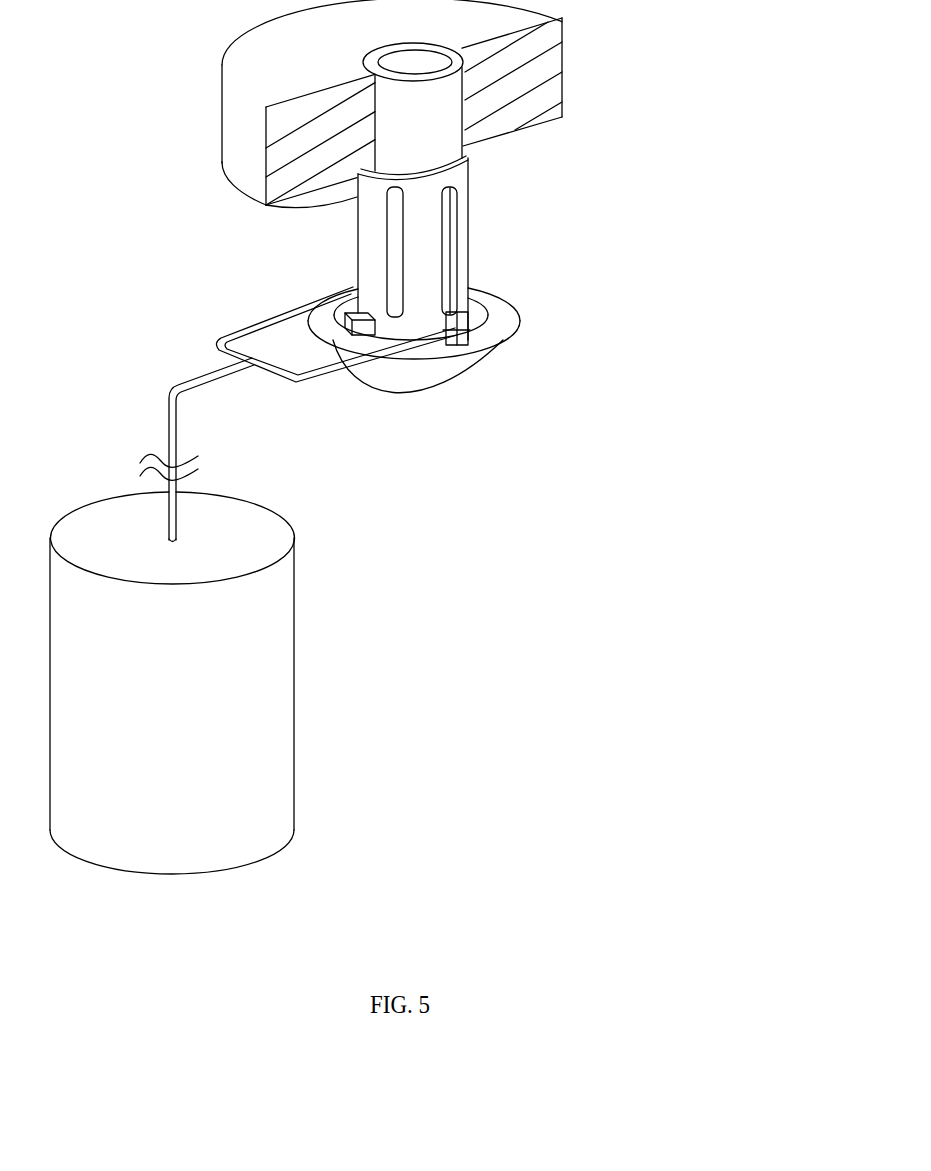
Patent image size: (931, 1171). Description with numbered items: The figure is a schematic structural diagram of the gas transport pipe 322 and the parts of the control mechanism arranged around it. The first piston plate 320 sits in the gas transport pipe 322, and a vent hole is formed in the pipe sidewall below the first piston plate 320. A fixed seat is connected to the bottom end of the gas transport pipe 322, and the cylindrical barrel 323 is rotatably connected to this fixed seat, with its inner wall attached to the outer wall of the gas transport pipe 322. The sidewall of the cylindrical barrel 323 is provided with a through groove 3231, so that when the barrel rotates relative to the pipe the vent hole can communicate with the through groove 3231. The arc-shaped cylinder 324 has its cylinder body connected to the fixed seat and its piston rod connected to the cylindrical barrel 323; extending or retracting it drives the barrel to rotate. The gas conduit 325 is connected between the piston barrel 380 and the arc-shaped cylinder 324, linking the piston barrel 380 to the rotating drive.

The first piston plate 320 is at (503, 100).
The gas transport pipe 322 is at (265, 204).
The cylindrical barrel 323 is at (468, 192).
The through groove 3231 is at (448, 262).
The arc-shaped cylinder 324 is at (480, 323).
The gas conduit 325 is at (301, 385).
The piston barrel 380 is at (248, 692).